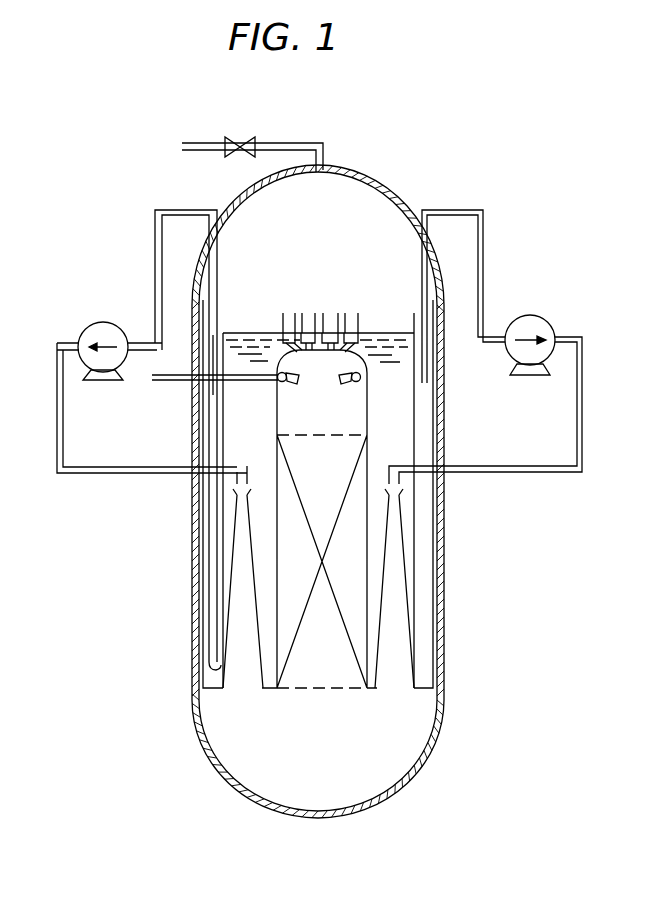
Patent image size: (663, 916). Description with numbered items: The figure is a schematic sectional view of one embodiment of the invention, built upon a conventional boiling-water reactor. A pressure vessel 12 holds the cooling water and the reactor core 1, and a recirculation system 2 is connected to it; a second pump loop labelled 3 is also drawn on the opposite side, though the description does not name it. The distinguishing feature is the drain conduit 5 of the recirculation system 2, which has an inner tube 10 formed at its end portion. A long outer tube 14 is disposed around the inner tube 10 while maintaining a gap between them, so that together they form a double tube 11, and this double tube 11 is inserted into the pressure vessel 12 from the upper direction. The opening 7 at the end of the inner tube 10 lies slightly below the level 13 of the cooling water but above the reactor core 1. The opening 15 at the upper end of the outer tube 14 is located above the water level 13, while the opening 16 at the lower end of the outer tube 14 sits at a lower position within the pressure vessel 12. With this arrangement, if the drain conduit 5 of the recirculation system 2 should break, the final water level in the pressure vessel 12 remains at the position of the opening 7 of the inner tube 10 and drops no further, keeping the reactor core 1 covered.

The reactor core 1 is at (355, 558).
The recirculation system 2 is at (56, 403).
The second pump circuit 3 is at (527, 314).
The drain conduit 5 is at (208, 268).
The opening 7 is at (213, 395).
The inner tube 10 is at (217, 322).
The double tube 11 is at (197, 350).
The pressure vessel 12 is at (238, 201).
The level 13 is at (258, 323).
The outer tube 14 is at (206, 583).
The opening 15 is at (224, 325).
The opening 16 is at (207, 665).